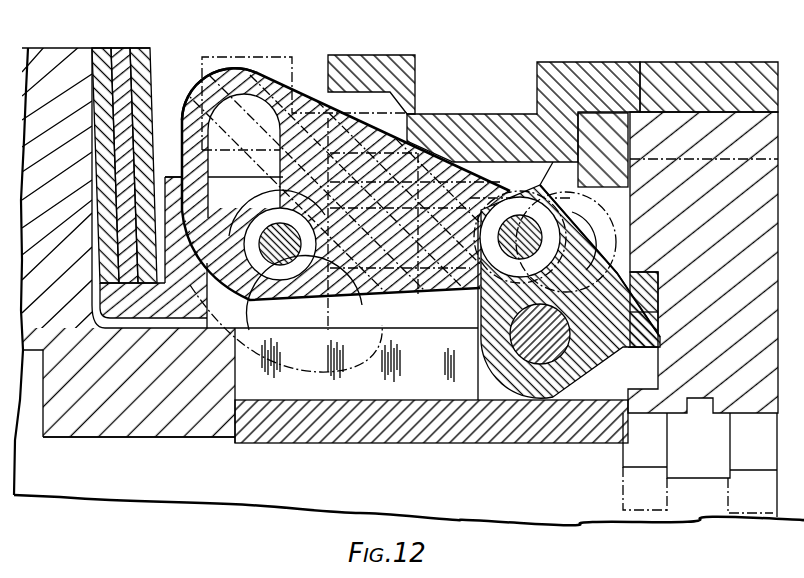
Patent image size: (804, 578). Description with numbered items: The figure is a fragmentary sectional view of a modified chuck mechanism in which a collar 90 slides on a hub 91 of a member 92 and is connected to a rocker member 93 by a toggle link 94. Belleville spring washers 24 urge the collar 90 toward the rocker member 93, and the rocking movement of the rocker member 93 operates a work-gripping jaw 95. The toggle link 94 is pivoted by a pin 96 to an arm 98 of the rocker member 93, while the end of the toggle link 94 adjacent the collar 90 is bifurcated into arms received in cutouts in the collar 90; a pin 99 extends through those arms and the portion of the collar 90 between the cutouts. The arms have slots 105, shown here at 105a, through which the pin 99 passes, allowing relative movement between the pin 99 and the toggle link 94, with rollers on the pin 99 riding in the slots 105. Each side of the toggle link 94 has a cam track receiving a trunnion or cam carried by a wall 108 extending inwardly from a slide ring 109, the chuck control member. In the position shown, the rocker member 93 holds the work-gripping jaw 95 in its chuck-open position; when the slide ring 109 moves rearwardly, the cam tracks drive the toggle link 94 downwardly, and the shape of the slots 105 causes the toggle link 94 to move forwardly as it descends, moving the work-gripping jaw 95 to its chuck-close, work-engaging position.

The Belleville spring washers 24 is at (147, 62).
The collar 90 is at (193, 320).
The hub 91 is at (142, 430).
The member 92 is at (91, 448).
The rocker member 93 is at (546, 395).
The toggle link 94 is at (393, 290).
The work-gripping jaw 95 is at (690, 118).
The pin 96 is at (517, 220).
The arm 98 is at (538, 193).
The pin 99 is at (276, 210).
The slots 105 is at (218, 110).
The slot 105a is at (252, 233).
The wall 108 is at (487, 166).
The slide ring 109 is at (416, 76).